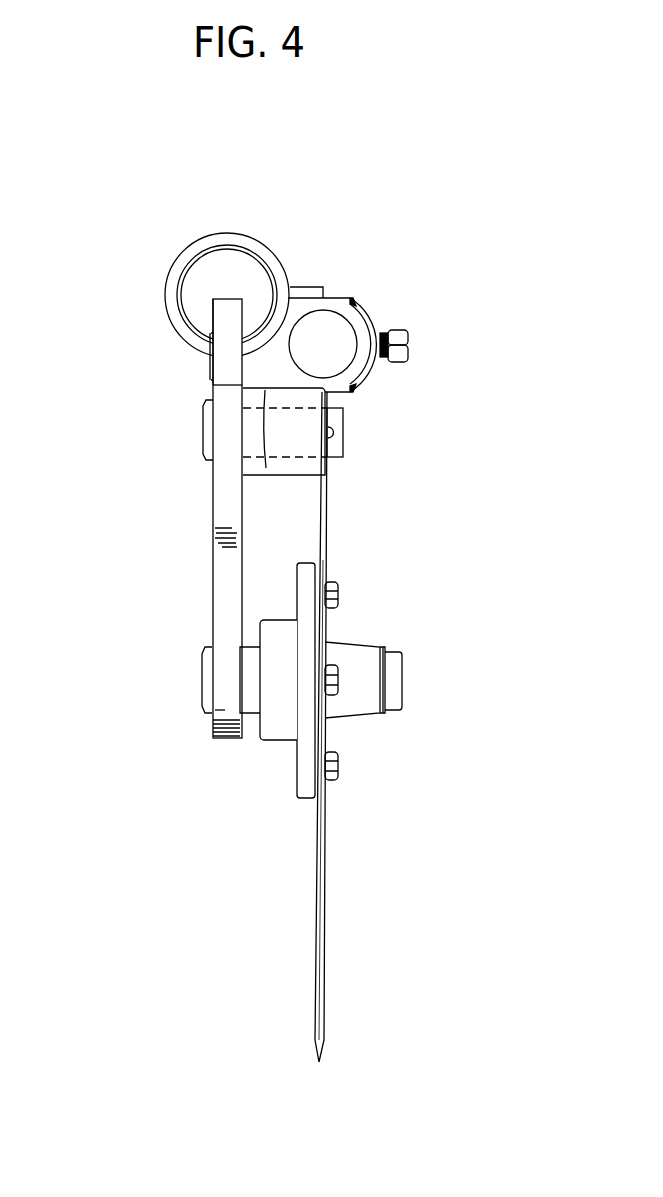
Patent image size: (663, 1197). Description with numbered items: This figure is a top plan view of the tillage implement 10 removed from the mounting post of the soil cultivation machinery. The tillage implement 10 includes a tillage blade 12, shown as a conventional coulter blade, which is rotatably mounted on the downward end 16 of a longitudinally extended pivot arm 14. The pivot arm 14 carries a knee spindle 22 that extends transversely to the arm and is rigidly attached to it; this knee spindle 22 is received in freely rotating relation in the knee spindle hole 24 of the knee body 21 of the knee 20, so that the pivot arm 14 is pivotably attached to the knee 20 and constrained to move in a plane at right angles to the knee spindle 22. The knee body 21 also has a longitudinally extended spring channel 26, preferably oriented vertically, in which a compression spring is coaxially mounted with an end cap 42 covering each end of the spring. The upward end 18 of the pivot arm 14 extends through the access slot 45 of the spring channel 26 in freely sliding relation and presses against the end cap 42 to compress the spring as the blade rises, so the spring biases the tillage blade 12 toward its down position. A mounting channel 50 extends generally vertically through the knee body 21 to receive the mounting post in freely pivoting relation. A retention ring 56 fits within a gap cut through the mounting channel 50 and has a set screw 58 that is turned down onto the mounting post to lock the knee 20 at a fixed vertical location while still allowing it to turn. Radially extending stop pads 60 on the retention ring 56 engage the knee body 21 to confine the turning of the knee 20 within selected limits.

The tillage implement 10 is at (279, 609).
The tillage blade 12 is at (326, 893).
The pivot arm 14 is at (213, 498).
The downward end 16 is at (212, 727).
The upward end 18 is at (215, 328).
The knee 20 is at (255, 237).
The knee body 21 is at (226, 233).
The knee spindle 22 is at (343, 450).
The knee spindle hole 24 is at (293, 457).
The spring channel 26 is at (178, 296).
The end cap 42 is at (198, 278).
The access slot 45 is at (210, 353).
The mounting channel 50 is at (343, 320).
The retention ring 56 is at (377, 372).
The set screw 58 is at (408, 335).
The stop pads 60 is at (351, 297).